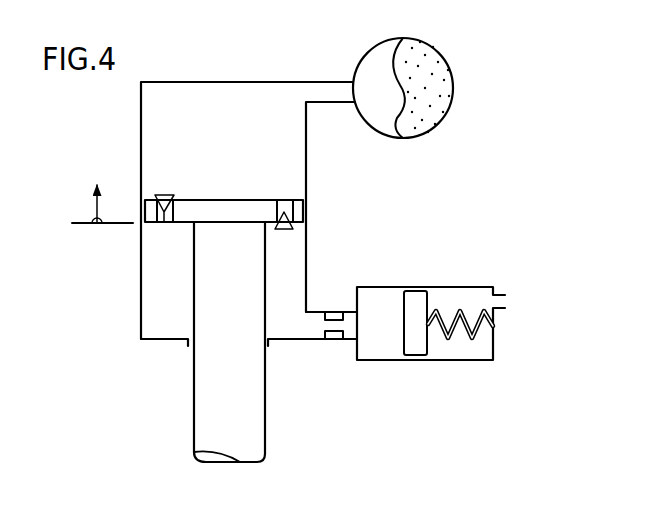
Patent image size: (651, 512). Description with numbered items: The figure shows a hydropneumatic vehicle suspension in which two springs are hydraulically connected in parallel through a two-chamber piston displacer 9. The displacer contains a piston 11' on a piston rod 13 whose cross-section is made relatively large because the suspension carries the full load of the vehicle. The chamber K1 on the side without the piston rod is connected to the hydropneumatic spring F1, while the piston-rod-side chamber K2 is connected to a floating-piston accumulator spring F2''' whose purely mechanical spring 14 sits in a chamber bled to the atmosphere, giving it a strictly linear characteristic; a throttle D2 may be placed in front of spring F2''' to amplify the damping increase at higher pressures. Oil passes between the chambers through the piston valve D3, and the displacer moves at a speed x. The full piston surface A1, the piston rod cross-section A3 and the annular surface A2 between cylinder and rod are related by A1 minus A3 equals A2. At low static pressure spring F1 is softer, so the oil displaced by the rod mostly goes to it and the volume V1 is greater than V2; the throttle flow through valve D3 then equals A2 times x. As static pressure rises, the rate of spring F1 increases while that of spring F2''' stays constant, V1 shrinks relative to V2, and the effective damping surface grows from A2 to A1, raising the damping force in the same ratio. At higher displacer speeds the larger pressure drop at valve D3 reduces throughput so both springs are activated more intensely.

The chamber K1 is at (148, 117).
The chamber K2 is at (152, 313).
The hydropneumatic spring F1 is at (451, 116).
The oil volume delivered to spring F1 V1 is at (428, 58).
The piston 11' is at (225, 195).
The piston valve D3 is at (163, 222).
The piston rod 13 is at (215, 350).
The cylindrical surface A1 is at (306, 152).
The annular surface A2 is at (143, 269).
The piston rod cross-section A3 is at (264, 408).
The displacer speed x is at (102, 201).
The piston displacer 9 is at (138, 239).
The spring F2''' is at (437, 296).
The oil volume delivered to spring F2''' V2 is at (475, 292).
The mechanical spring 14 is at (452, 333).
The throttle D2 is at (333, 343).